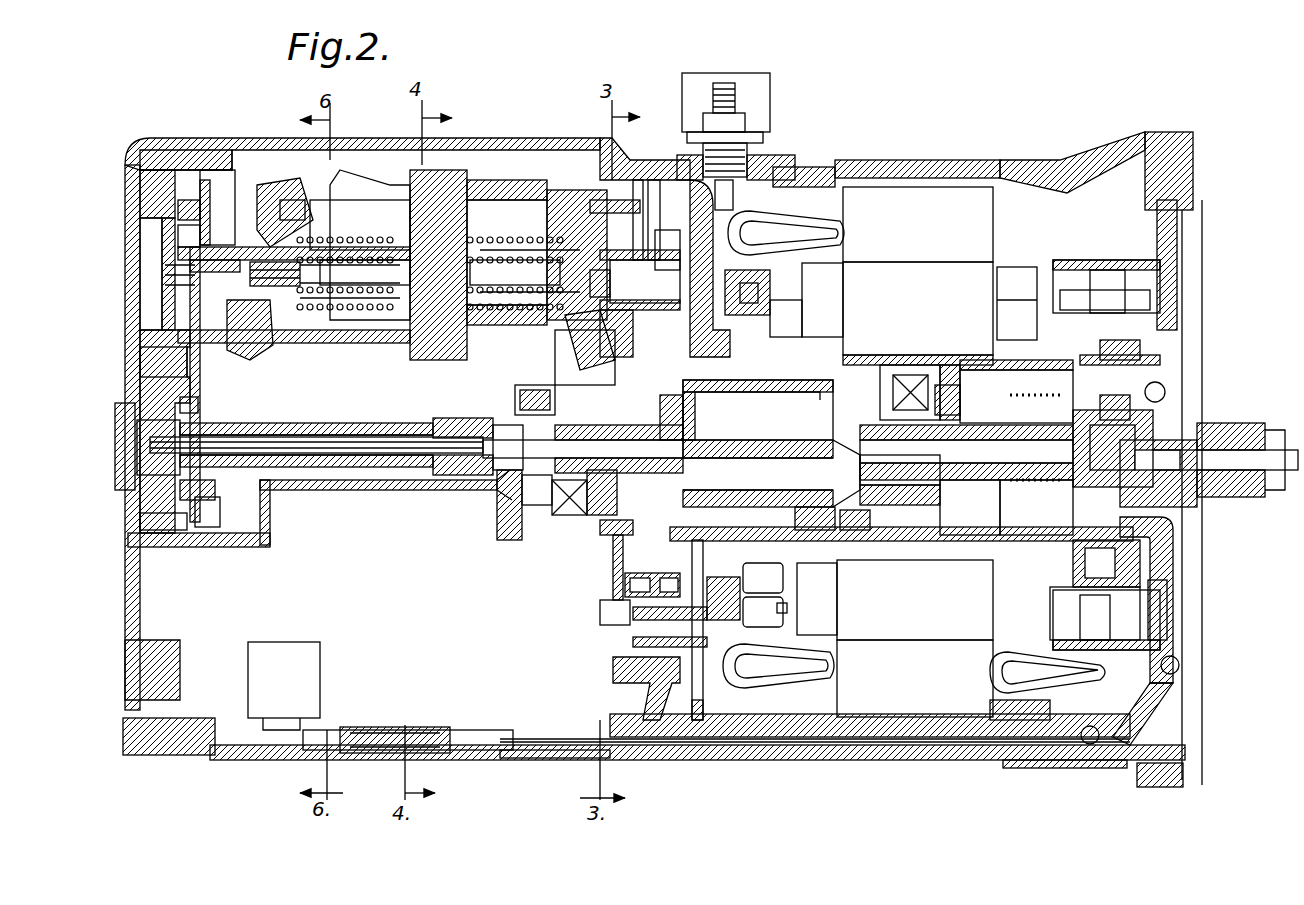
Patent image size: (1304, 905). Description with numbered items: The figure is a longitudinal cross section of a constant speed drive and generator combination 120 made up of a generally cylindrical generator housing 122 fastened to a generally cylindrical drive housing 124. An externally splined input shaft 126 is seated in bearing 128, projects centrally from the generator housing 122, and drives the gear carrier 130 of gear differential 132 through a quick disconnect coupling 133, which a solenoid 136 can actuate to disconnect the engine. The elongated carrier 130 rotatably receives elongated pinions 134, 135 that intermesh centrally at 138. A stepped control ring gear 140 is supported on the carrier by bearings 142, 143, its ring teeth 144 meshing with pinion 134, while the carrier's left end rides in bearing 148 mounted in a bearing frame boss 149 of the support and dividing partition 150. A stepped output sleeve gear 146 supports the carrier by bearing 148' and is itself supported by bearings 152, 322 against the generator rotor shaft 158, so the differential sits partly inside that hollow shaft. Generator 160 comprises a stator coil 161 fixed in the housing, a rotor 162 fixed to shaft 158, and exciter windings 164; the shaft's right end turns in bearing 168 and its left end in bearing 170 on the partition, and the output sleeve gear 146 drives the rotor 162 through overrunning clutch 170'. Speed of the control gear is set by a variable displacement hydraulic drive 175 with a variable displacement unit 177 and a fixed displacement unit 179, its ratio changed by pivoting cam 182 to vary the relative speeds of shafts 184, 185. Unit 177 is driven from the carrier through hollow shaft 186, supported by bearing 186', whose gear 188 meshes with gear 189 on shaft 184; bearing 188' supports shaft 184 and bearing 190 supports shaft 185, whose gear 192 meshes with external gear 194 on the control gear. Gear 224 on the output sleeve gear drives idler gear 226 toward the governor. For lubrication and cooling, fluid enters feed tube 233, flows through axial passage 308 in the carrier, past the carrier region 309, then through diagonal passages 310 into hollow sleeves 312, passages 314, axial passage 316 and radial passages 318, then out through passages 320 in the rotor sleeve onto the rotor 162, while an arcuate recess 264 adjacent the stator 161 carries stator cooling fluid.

The constant speed drive and generator combination 120 is at (917, 783).
The generator housing 122 is at (853, 755).
The drive housing 124 is at (537, 762).
The input shaft 126 is at (1267, 500).
The bearing 128 is at (1133, 408).
The gear carrier 130 is at (880, 485).
The gear differential 132 is at (867, 542).
The quick disconnect coupling 133 is at (1050, 522).
The pinion 134 is at (868, 342).
The pinion 135 is at (813, 540).
The solenoid 136 is at (300, 642).
The central intermesh of pinions 138 is at (750, 440).
The control ring gear 140 is at (590, 385).
The bearing 142 is at (515, 398).
The bearing 143 is at (672, 420).
The ring teeth 144 is at (705, 385).
The output sleeve gear 146 is at (800, 560).
The bearing 148 is at (494, 519).
The bearing 148' is at (914, 367).
The bearing frame boss 149 is at (545, 525).
The support and dividing partition 150 is at (697, 547).
The bearing 152 is at (790, 325).
The generator rotor shaft 158 is at (1000, 355).
The generator 160 is at (1040, 700).
The stator coil 161 is at (955, 198).
The rotor 162 is at (898, 267).
The exciter windings 164 is at (1133, 257).
The bearing / internal teeth 168 is at (800, 538).
The bearing 170 is at (784, 250).
The overrunning clutch 170' is at (846, 612).
The variable displacement hydraulic drive 175 is at (497, 180).
The variable displacement axial piston hydraulic unit 177 is at (372, 185).
The fixed displacement axial piston hydraulic unit 179 is at (540, 188).
The cam 182 is at (275, 195).
The hydraulic unit shaft 184 is at (245, 215).
The hydraulic unit shaft 185 is at (635, 280).
The hollow shaft 186 is at (306, 427).
The bearing 186' is at (127, 427).
The gear 188 is at (204, 535).
The bearing 188' is at (128, 223).
The gear 189 is at (180, 330).
The bearing 190 is at (675, 240).
The gear 192 is at (680, 185).
The external gear 194 is at (640, 557).
The gear 224 is at (607, 627).
The idler gear 226 is at (700, 722).
The feed tube 233 is at (330, 465).
The arcuate recess 264 is at (953, 717).
The axial passage 308 is at (507, 447).
The intermediate shaft 309 is at (583, 446).
The diagonal passages 310 is at (668, 425).
The hollow sleeves 312 is at (760, 467).
The passages 314 is at (950, 368).
The axial passage 316 is at (945, 455).
The radial passages 318 is at (960, 432).
The passages 320 is at (1057, 370).
The bearing 322 is at (985, 372).